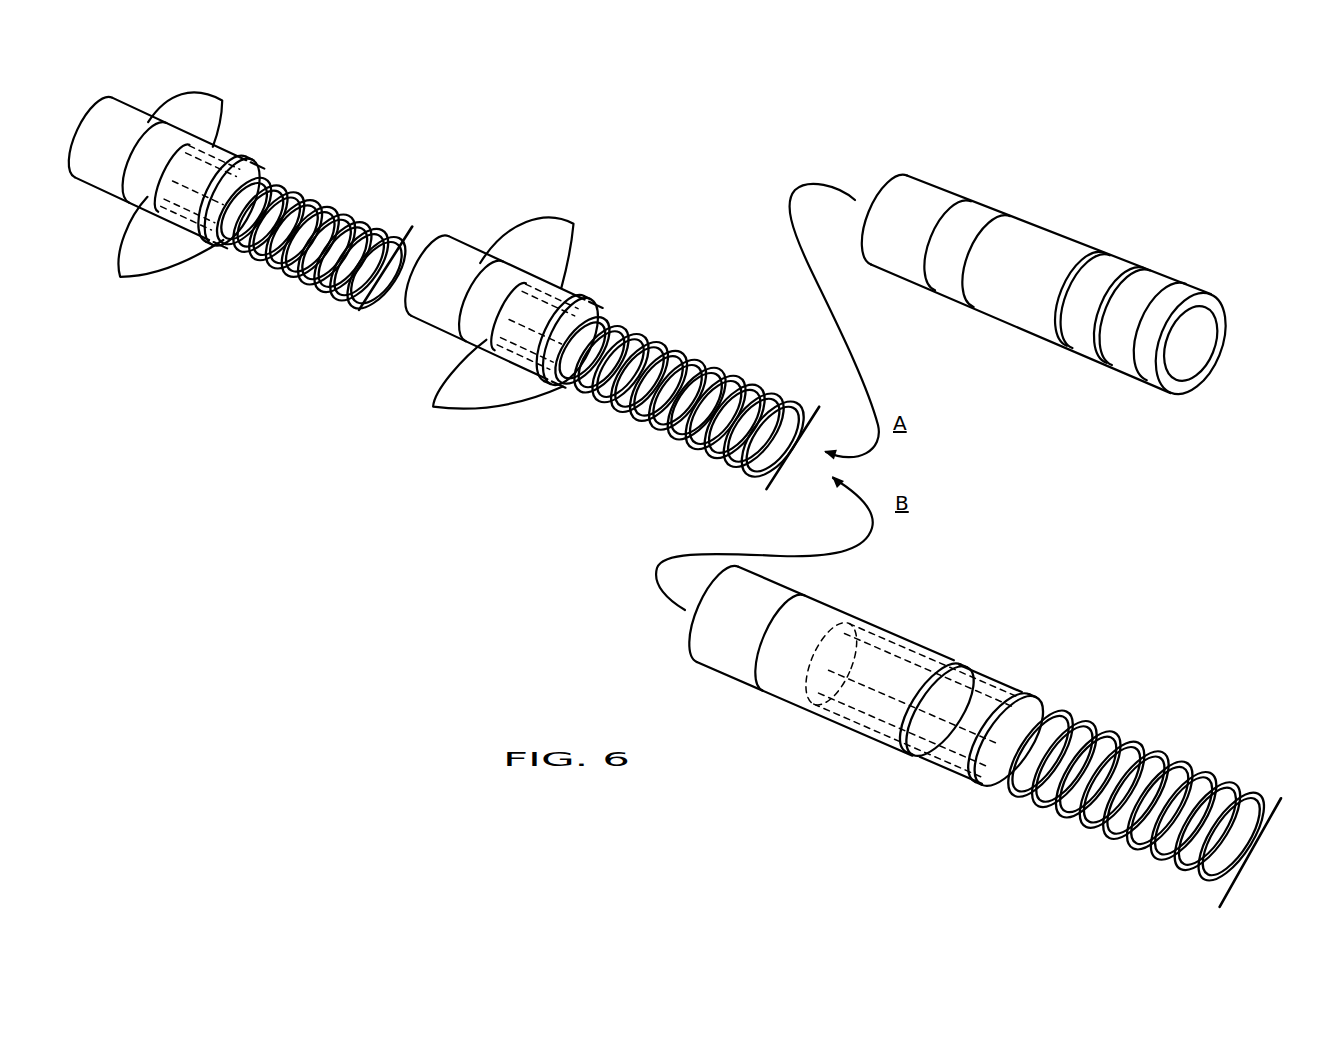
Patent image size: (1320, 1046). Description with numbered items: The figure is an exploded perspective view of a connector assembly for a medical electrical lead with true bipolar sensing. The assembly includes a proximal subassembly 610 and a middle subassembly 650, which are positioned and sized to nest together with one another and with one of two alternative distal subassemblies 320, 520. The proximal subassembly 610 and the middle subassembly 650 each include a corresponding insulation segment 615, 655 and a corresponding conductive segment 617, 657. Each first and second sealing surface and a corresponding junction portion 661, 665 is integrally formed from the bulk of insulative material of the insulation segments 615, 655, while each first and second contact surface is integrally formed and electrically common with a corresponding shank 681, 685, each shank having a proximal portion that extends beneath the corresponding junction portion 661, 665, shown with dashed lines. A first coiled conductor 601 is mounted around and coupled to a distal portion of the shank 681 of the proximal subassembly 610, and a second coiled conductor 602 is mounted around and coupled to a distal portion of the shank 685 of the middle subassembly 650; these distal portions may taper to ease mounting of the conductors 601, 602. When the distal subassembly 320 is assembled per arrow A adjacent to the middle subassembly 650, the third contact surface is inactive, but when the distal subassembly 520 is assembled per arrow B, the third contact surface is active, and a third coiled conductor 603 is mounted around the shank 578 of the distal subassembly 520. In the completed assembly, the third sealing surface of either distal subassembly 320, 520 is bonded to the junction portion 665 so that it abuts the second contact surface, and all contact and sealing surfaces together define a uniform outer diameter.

The proximal subassembly 610 is at (241, 174).
The insulation segment 615 is at (223, 98).
The conductive segment 617 is at (120, 277).
The junction portion 661 is at (240, 152).
The shank 681 is at (260, 192).
The first coiled conductor 601 is at (337, 228).
The middle subassembly 650 is at (607, 318).
The insulation segment 655 is at (572, 222).
The conductive segment 657 is at (433, 407).
The junction portion 665 is at (577, 294).
The shank 685 is at (605, 343).
The second coiled conductor 602 is at (697, 387).
The distal subassembly 320 is at (1043, 209).
The distal subassembly 520 is at (979, 735).
The shank 578 is at (1036, 722).
The third coiled conductor 603 is at (1138, 764).